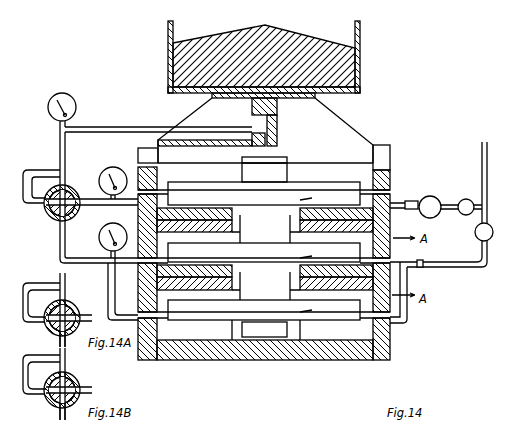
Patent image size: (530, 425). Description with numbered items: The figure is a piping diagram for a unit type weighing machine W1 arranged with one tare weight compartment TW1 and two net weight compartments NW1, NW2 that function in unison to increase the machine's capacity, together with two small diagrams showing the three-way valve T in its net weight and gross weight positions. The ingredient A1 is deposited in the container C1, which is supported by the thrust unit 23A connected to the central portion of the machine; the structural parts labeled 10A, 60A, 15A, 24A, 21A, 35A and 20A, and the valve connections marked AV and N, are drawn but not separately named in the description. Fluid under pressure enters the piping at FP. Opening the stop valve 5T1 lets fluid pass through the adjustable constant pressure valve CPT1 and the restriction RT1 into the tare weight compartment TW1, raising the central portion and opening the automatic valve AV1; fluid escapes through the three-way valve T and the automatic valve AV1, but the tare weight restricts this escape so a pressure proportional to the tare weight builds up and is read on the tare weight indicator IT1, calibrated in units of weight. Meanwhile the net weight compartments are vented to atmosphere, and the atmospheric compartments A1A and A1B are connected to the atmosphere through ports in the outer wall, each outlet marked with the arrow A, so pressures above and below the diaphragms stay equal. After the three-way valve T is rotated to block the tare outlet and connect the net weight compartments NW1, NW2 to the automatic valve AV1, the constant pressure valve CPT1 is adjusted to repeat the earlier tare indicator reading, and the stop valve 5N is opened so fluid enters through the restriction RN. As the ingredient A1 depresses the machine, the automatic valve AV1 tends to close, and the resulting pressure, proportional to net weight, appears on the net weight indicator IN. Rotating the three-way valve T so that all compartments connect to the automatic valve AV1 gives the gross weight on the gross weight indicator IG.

In FIG. 14, the ingredient A1 is at (340, 58).
In FIG. 14, the container C1 is at (360, 82).
In FIG. 14, the automatic valve AV1 is at (279, 125).
In FIG. 14, the thrust unit 23A is at (343, 128).
In FIG. 14, the housing 10A is at (391, 172).
In FIG. 14, the weight machine W1 is at (392, 341).
In FIG. 14, the base plate 60A is at (392, 357).
In FIG. 14, the tare weight compartment TW1 is at (300, 211).
In FIG. 14, the atmospheric compartment A1A is at (266, 236).
In FIG. 14, the net weight compartment NW1 is at (300, 268).
In FIG. 14, the atmospheric compartment A1B is at (266, 293).
In FIG. 14, the piston head 15A is at (281, 188).
In FIG. 14, the net weight compartment NW2 is at (300, 328).
In FIG. 14, the slide plate 24A is at (264, 251).
In FIG. 14, the feed slot 21A is at (166, 190).
In FIG. 14, the passage 35A is at (310, 200).
In FIG. 14, the gross weight indicator IG is at (62, 99).
In FIG. 14, the air vent line AV is at (137, 162).
In FIG. 14A, the air vent line AV is at (53, 310).
In FIG. 14B, the air vent line AV is at (53, 384).
In FIG. 14, the atmospheric outlet A is at (49, 218).
In FIG. 14, the three-way valve T is at (92, 195).
In FIG. 14A, the three-way valve T is at (72, 318).
In FIG. 14B, the three-way valve T is at (72, 390).
In FIG. 14, the tare weight indicator IT1 is at (113, 177).
In FIG. 14, the net weight indicator IN is at (113, 234).
In FIG. 14, the return line N is at (99, 270).
In FIG. 14A, the return line N is at (69, 344).
In FIG. 14B, the return line N is at (69, 416).
In FIG. 14, the restriction RT1 is at (411, 200).
In FIG. 14, the adjustable constant pressure valve CPT1 is at (440, 216).
In FIG. 14, the stop valve 5T1 is at (461, 201).
In FIG. 14, the fluid pressure inlet FP is at (484, 176).
In FIG. 14, the stop valve 5N is at (494, 232).
In FIG. 14, the restriction RN is at (423, 262).
In FIG. 14, the outlet passages 20A is at (392, 285).